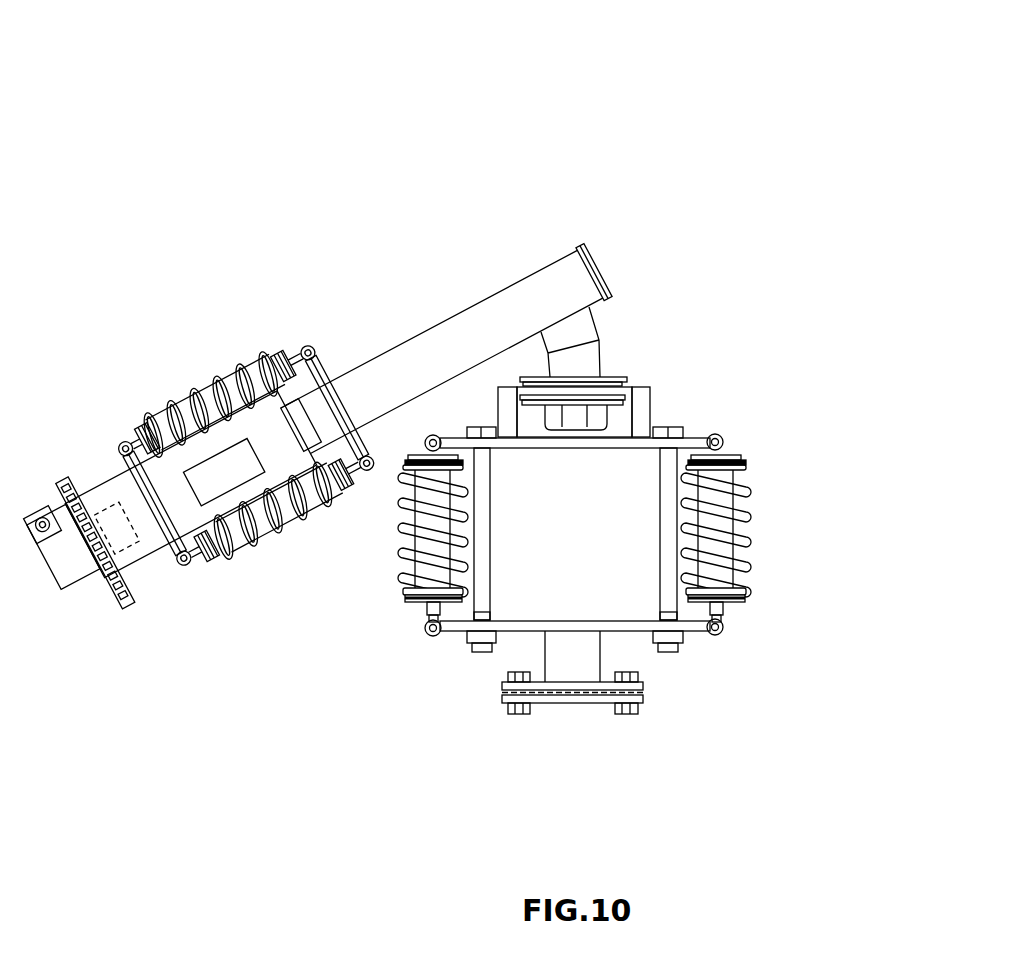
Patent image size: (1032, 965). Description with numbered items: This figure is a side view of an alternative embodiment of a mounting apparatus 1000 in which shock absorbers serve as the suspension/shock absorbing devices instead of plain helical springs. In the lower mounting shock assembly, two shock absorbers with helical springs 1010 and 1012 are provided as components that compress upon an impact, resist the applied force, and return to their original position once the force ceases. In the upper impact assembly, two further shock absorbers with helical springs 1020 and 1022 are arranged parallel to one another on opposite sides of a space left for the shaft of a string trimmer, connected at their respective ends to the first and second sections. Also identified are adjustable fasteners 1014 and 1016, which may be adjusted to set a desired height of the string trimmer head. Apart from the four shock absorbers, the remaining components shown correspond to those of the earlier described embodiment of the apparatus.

The mounting apparatus 1000 is at (660, 330).
The shock absorber with helical spring 1010 is at (424, 587).
The shock absorber with helical spring 1012 is at (731, 497).
The adjustable fastener 1014 is at (480, 574).
The adjustable fastener 1016 is at (668, 456).
The shock absorber with helical spring 1020 is at (212, 360).
The shock absorber with helical spring 1022 is at (282, 535).